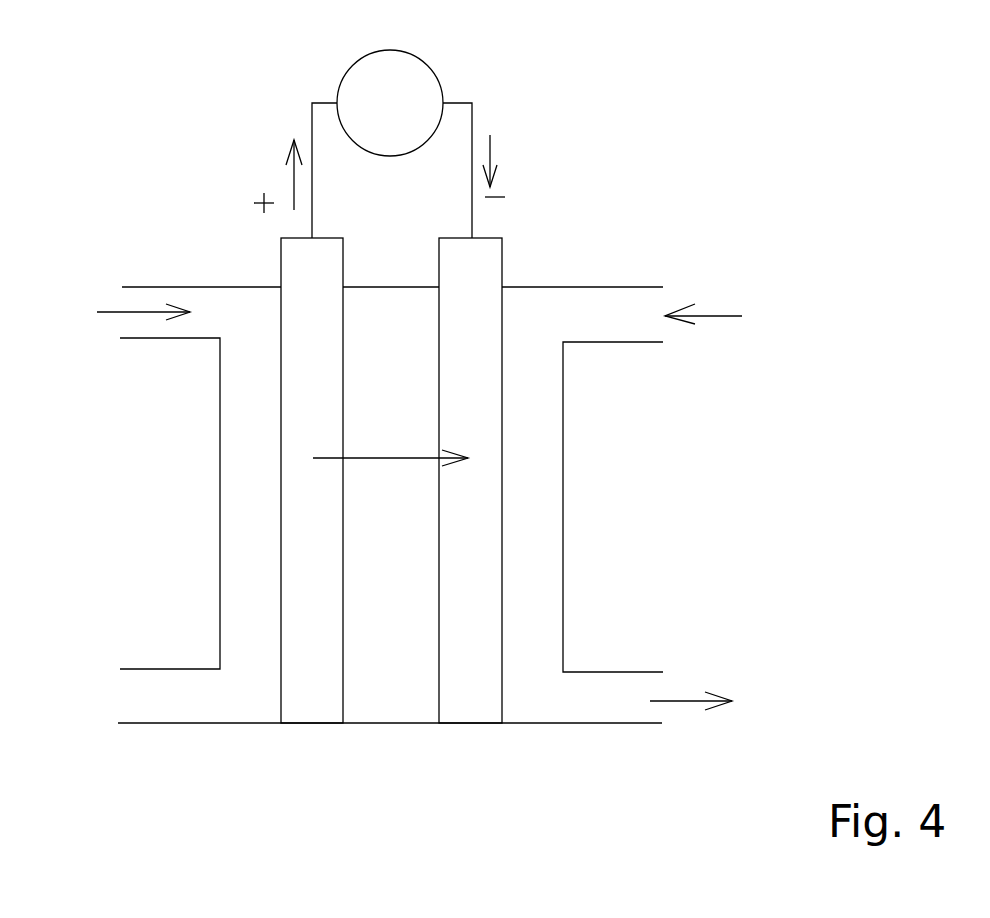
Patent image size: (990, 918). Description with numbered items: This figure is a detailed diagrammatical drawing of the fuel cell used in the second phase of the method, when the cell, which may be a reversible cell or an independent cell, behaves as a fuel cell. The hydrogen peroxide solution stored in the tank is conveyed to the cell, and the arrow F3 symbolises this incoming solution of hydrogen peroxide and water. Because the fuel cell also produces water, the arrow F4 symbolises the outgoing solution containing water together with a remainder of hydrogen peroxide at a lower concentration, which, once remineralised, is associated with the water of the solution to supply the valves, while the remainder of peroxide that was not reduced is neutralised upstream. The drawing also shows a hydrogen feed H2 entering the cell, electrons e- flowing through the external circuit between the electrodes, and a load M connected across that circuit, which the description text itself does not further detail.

The motor / electrical load M is at (390, 103).
The hydrogen inlet flow H2 is at (143, 312).
The arrow F3 is at (727, 316).
The arrow F4 is at (700, 701).
The electron flow e- is at (293, 190).